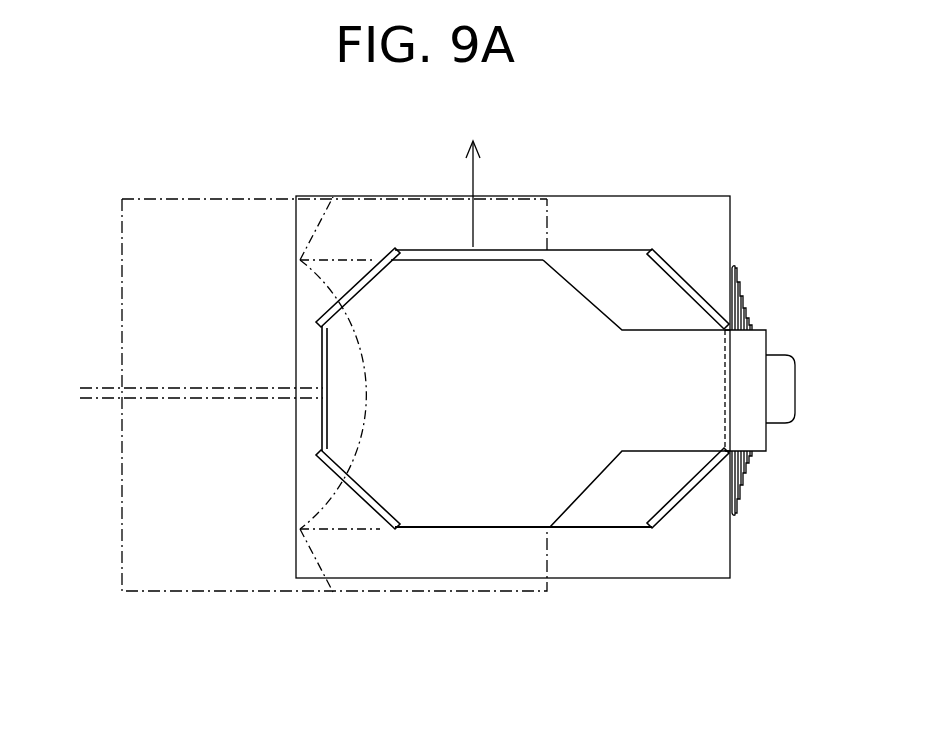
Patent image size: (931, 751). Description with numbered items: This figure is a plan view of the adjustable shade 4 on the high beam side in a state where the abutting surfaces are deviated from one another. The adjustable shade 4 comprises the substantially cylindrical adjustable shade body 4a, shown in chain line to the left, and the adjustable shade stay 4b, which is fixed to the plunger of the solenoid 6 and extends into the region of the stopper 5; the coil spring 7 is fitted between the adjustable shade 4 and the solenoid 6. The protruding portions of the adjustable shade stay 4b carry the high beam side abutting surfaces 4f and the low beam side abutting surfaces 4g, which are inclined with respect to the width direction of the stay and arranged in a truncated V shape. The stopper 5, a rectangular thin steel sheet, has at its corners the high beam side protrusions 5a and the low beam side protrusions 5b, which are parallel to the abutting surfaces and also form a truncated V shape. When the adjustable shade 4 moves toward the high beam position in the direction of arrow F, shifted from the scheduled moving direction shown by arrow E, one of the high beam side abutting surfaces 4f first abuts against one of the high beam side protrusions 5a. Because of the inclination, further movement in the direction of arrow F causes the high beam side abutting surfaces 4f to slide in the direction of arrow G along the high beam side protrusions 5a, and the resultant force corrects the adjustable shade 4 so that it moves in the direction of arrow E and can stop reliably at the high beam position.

The adjustable shade 4 is at (120, 231).
The adjustable shade body 4a is at (220, 198).
The adjustable shade stay 4b is at (757, 352).
The high beam side abutting surfaces 4f is at (378, 278).
The low beam side abutting surfaces 4g is at (584, 296).
The stopper 5 is at (468, 531).
The high beam side protrusions 5a is at (358, 282).
The low beam side protrusions 5b is at (693, 288).
The solenoid 6 is at (736, 558).
The coil spring 7 is at (750, 276).
The arrow G is at (475, 168).
The arrow E is at (95, 386).
The arrow F is at (94, 402).